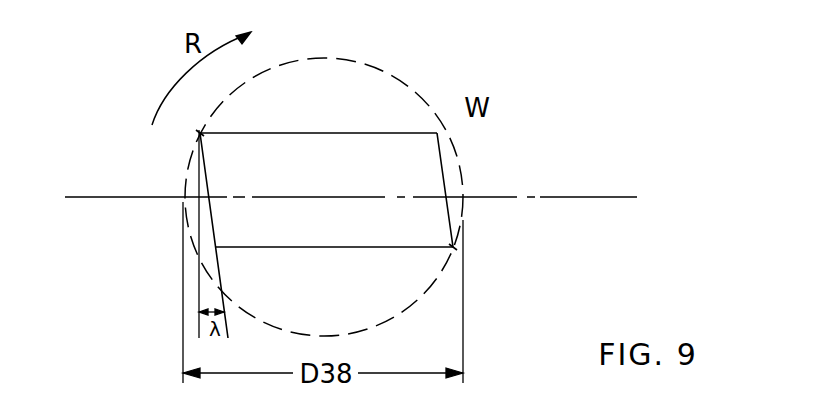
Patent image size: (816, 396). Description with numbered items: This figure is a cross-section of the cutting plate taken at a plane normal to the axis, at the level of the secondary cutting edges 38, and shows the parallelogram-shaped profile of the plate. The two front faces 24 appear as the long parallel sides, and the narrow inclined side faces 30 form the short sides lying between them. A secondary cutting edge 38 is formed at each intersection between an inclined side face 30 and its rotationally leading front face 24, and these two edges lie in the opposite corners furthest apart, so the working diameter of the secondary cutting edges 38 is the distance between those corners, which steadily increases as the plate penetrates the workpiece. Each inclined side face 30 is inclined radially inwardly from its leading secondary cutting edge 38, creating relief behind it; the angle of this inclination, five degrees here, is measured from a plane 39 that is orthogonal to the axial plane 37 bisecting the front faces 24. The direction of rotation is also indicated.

The front face 24 is at (387, 133).
The inclined side face 30 is at (204, 216).
The axial plane 37 is at (588, 197).
The secondary cutting edge 38 is at (200, 133).
The plane orthogonal to the axial plane 39 is at (197, 298).